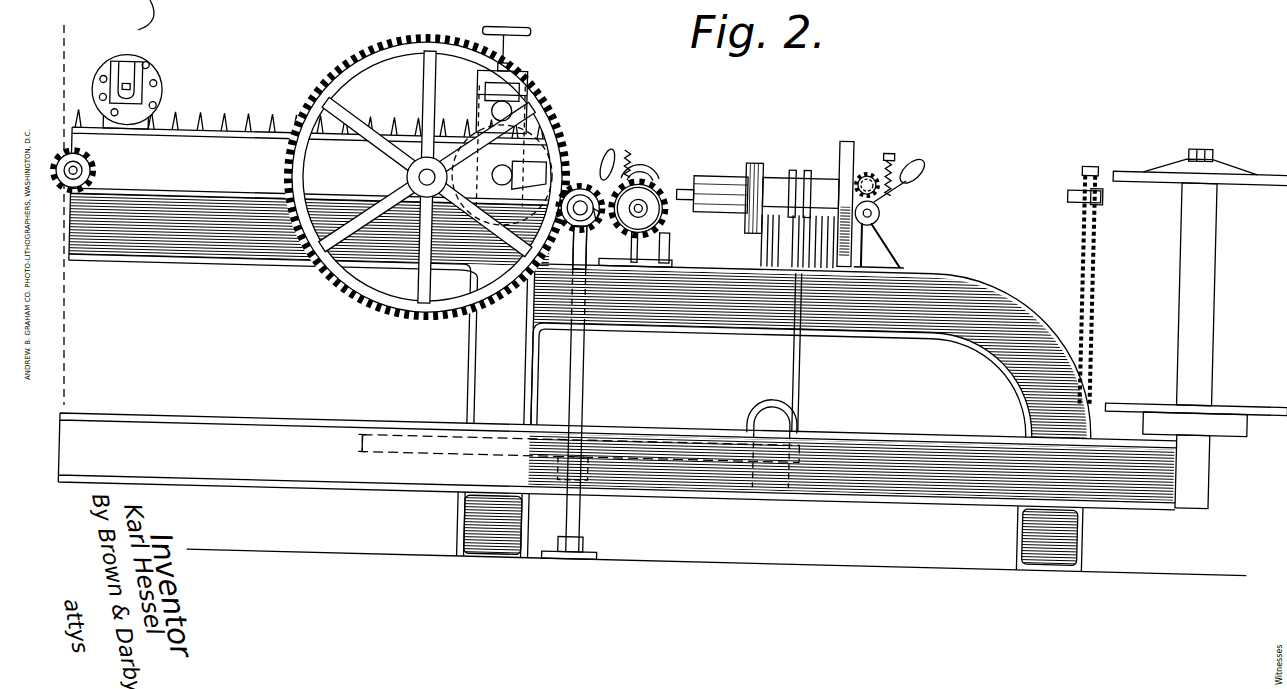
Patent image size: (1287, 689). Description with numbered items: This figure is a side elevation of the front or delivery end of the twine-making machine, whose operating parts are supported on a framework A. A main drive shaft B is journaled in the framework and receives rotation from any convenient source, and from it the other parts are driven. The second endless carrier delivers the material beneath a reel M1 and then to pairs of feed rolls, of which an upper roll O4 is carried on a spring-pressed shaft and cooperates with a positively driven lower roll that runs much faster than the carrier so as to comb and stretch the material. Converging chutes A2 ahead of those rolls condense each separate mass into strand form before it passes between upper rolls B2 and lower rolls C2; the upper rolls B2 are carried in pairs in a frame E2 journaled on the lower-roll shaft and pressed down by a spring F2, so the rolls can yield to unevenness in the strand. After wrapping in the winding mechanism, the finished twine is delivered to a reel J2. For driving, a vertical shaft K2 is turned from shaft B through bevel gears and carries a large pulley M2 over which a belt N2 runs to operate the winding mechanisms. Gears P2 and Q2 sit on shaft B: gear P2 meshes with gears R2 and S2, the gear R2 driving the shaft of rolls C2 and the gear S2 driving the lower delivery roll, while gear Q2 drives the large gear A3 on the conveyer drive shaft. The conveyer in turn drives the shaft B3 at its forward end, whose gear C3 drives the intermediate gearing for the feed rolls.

The framework A is at (228, 231).
The chutes A2 is at (633, 198).
The large gear A3 is at (347, 276).
The main drive shaft B is at (575, 195).
The upper rolls B2 is at (642, 155).
The cooperating shaft B3 is at (81, 162).
The lower rolls C2 is at (866, 220).
The gear C3 is at (77, 176).
The frame E2 is at (891, 169).
The spring F2 is at (626, 146).
The reel J2 is at (1204, 236).
The vertical shaft K2 is at (579, 362).
The reel M1 is at (140, 75).
The large pulley M2 is at (411, 446).
The belt N2 is at (799, 362).
The upper roll O4 is at (469, 97).
The gear P2 is at (575, 209).
The gear Q2 is at (592, 207).
The gear R2 is at (652, 202).
The gear S2 is at (478, 212).